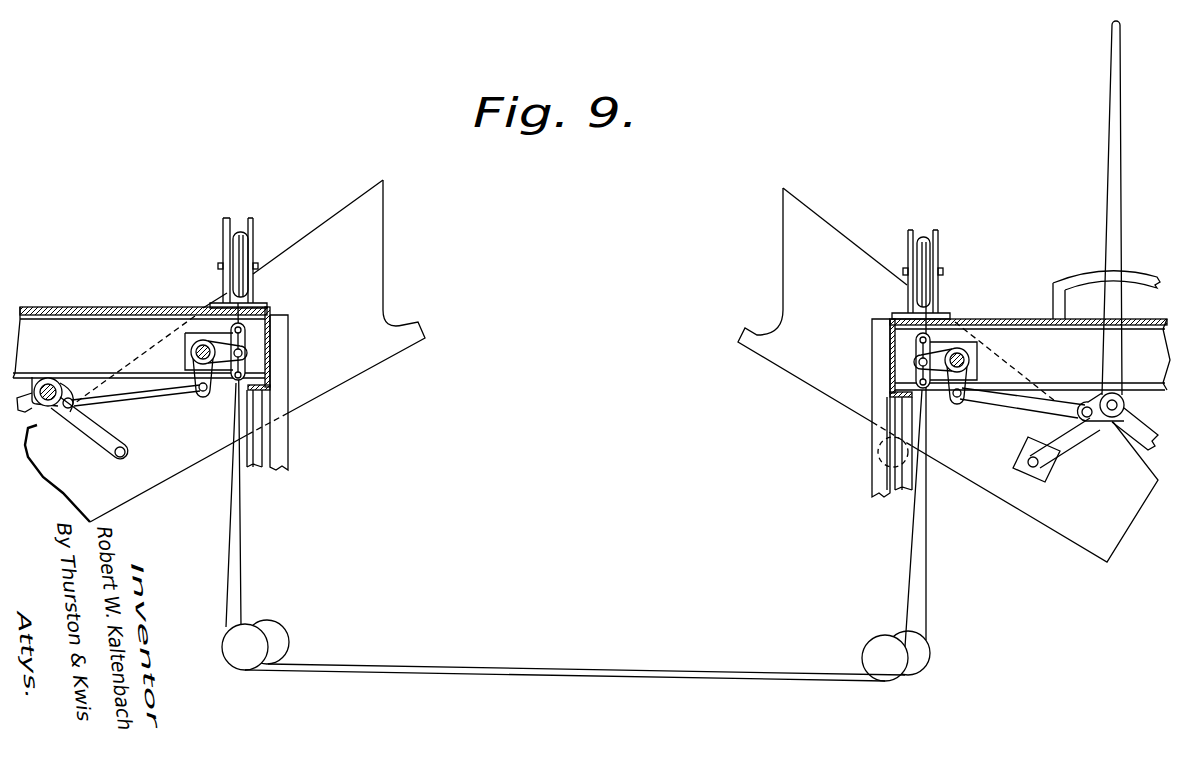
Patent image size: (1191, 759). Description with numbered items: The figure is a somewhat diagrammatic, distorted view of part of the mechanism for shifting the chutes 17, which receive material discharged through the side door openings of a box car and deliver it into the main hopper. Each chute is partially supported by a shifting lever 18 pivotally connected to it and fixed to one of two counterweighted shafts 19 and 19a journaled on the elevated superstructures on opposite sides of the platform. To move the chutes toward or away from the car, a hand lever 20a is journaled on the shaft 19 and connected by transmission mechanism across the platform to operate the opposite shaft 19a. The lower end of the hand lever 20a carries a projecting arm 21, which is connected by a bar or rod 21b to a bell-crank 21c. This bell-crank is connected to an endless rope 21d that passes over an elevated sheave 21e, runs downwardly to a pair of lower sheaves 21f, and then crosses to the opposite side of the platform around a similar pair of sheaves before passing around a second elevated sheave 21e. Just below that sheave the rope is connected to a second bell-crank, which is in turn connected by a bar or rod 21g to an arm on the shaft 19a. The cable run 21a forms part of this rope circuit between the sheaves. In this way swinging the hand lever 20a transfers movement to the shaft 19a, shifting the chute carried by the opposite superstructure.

The chute 17 is at (840, 383).
The shifting lever 18 is at (95, 442).
The shaft 19 is at (1112, 420).
The shaft 19a is at (48, 406).
The hand lever 20a is at (1108, 225).
The arm 21 is at (1092, 420).
The cable run 21a is at (542, 665).
The bar or rod 21b is at (877, 648).
The bell-crank 21c is at (213, 383).
The endless rope 21d is at (242, 540).
The elevated sheave 21e is at (240, 242).
The lower sheaves 21f is at (260, 643).
The bar or rod 21g is at (168, 388).